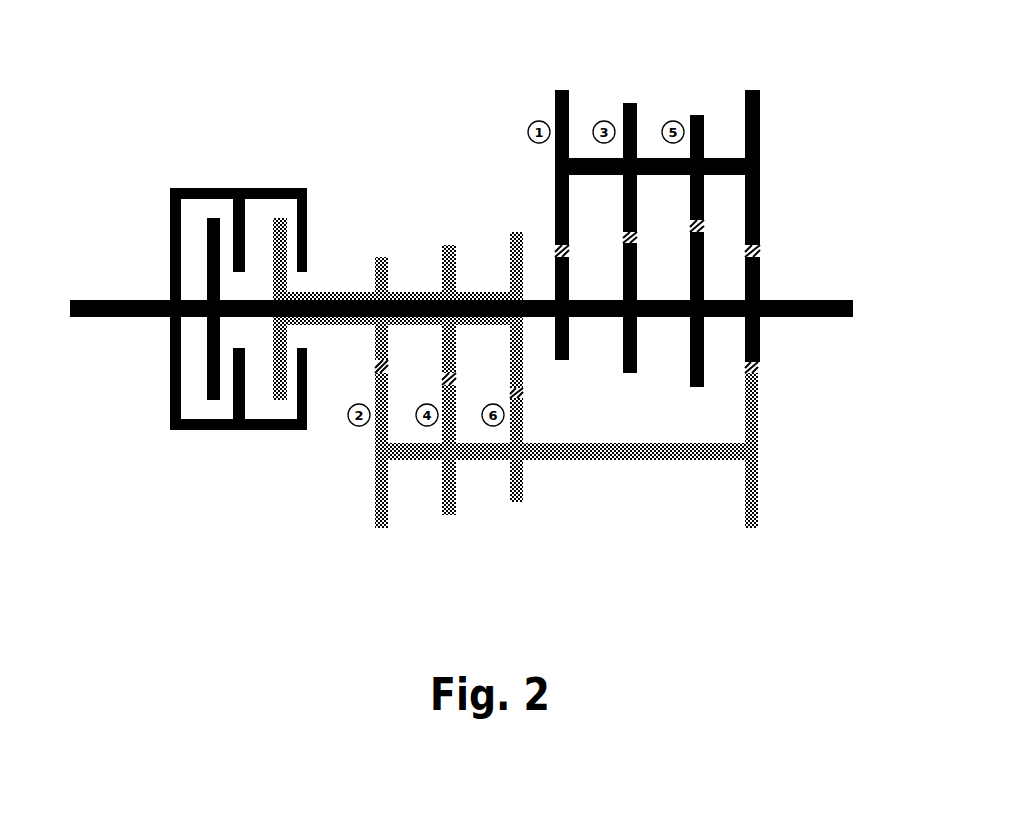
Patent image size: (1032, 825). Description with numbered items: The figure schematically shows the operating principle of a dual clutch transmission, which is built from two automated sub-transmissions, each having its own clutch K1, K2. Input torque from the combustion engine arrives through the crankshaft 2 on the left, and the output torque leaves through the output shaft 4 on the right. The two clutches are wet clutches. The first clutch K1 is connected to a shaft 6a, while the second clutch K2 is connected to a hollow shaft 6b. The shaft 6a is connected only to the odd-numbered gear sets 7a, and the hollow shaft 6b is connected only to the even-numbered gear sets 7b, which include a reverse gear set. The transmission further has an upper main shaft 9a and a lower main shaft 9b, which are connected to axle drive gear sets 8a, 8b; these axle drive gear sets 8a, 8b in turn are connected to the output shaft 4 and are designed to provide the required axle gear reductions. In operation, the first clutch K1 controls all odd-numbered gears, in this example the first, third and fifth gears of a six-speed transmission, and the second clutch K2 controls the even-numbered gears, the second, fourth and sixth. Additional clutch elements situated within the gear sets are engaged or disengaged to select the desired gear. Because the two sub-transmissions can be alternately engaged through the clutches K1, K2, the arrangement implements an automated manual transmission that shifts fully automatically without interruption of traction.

The crankshaft 2 is at (101, 300).
The output shaft 4 is at (828, 317).
The first clutch K1 is at (211, 188).
The second clutch K2 is at (281, 188).
The shaft 6a is at (537, 300).
The hollow shaft 6b is at (353, 292).
The odd-numbered gear sets 7a is at (693, 387).
The even-numbered gear sets 7b is at (510, 232).
The axle drive gear set 8a is at (693, 115).
The axle drive gear set 8b is at (515, 502).
The upper main shaft 9a is at (727, 158).
The lower main shaft 9b is at (645, 460).